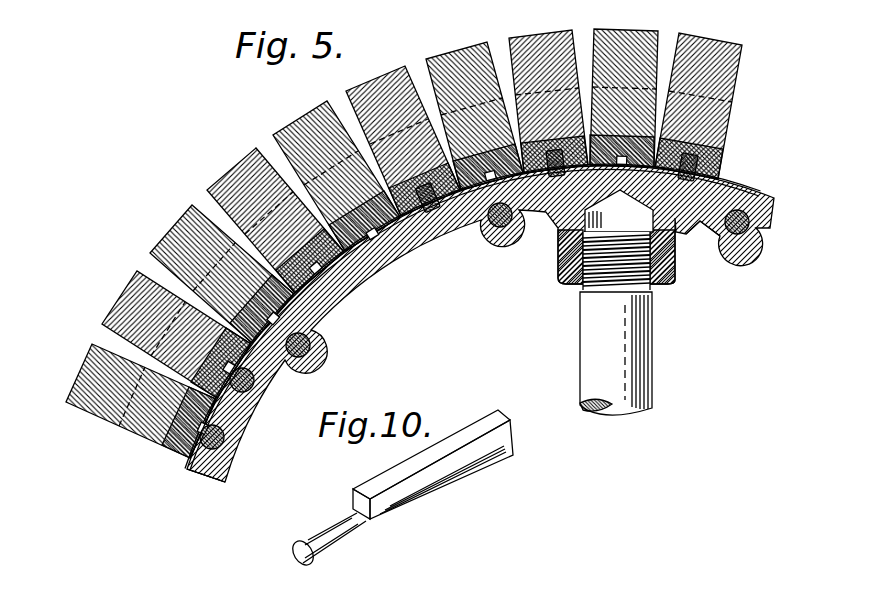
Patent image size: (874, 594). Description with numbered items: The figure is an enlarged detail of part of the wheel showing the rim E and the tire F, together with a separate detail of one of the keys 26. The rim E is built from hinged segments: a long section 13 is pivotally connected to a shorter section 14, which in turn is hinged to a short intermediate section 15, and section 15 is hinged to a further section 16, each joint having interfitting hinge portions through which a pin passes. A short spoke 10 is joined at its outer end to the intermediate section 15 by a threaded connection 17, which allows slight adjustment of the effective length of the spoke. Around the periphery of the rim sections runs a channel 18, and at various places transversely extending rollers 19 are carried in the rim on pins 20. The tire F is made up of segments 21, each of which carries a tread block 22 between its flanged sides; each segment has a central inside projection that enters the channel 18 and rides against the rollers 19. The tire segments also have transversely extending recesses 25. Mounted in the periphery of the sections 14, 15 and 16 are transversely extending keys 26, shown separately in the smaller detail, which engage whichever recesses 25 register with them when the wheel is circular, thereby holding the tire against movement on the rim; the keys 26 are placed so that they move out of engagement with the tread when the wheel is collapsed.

In FIG. 5, the short spoke 10 is at (637, 360).
In FIG. 5, the long rim section 13 is at (280, 368).
In FIG. 5, the rim section 14 is at (336, 305).
In FIG. 5, the intermediate rim section 15 is at (697, 224).
In FIG. 5, the rim section 16 is at (766, 236).
In FIG. 5, the threaded connection 17 is at (558, 268).
In FIG. 5, the channel 18 is at (468, 197).
In FIG. 5, the roller 19 is at (236, 452).
In FIG. 5, the pin 20 is at (226, 437).
In FIG. 5, the tire segment 21 is at (722, 172).
In FIG. 5, the tread block 22 is at (738, 70).
In FIG. 5, the recess 25 is at (368, 238).
In FIG. 5, the key 26 is at (701, 175).
In FIG. 10, the key 26 is at (460, 478).
In FIG. 5, the rim E is at (204, 479).
In FIG. 5, the tire F is at (172, 460).